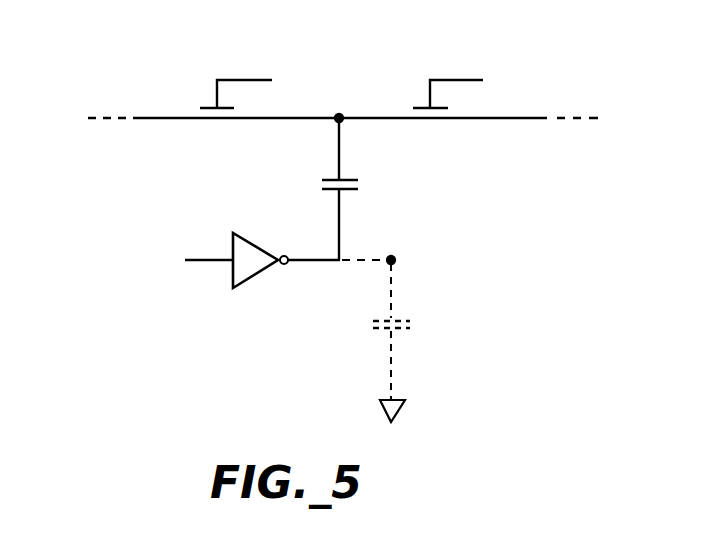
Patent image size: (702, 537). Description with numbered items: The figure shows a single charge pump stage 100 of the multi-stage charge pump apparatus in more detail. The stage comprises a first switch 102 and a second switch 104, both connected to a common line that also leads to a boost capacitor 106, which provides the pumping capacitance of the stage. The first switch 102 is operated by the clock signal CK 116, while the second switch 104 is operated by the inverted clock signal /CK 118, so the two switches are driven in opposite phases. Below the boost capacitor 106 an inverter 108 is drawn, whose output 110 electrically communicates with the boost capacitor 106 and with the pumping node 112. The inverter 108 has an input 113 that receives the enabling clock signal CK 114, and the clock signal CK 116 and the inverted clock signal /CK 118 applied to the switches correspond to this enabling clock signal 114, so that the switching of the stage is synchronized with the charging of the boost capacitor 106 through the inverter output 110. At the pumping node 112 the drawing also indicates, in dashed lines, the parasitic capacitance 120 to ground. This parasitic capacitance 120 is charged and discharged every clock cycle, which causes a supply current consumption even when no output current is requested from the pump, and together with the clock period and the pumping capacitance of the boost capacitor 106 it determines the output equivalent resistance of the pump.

The charge pump circuit 100 is at (188, 342).
The first switch 102 is at (188, 115).
The second switch 104 is at (407, 115).
The boost capacitor 106 is at (362, 182).
The inverter 108 is at (234, 280).
The output 110 is at (282, 255).
The pumping node 112 is at (398, 266).
The input 113 is at (212, 256).
The enabling clock signal 114 is at (138, 259).
The clock signal CK 116 is at (296, 65).
The inverted clock signal /CK 118 is at (519, 65).
The parasitic capacitance CPAR 120 is at (338, 340).